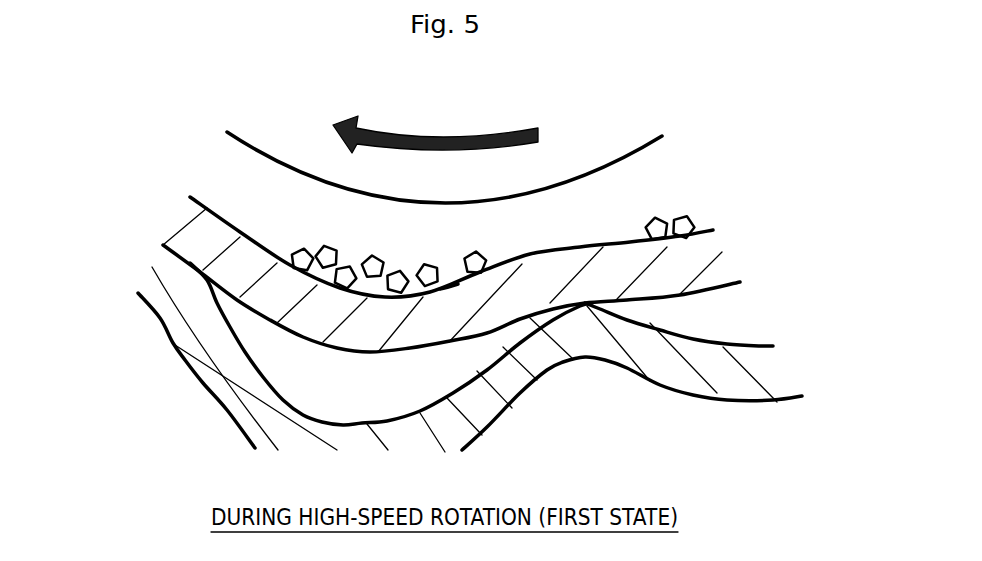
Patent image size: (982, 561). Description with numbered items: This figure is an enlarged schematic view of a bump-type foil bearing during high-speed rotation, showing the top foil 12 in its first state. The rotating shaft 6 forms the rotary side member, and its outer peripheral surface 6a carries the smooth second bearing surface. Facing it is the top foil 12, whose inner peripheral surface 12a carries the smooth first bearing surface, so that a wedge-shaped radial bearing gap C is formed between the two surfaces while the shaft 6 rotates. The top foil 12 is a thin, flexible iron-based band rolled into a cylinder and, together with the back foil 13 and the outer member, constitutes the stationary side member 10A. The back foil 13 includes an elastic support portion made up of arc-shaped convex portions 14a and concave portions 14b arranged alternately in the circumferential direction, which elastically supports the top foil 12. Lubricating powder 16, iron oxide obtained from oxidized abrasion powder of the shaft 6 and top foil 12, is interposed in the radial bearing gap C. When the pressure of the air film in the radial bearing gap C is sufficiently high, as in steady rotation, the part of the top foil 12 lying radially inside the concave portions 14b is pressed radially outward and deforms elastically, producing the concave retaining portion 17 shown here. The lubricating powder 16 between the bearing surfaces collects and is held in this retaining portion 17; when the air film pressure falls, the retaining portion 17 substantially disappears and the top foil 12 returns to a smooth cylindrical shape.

The shaft 6 is at (477, 135).
The outer peripheral surface 6a is at (240, 147).
The stationary side member 10A is at (177, 397).
The top foil 12 is at (430, 259).
The inner peripheral surface 12a is at (225, 213).
The back foil 13 is at (740, 390).
The convex portion 14a is at (583, 345).
The concave portion 14b is at (350, 438).
The lubricating powder 16 is at (330, 249).
The retaining portion 17 is at (446, 286).
The radial bearing gap C is at (582, 197).